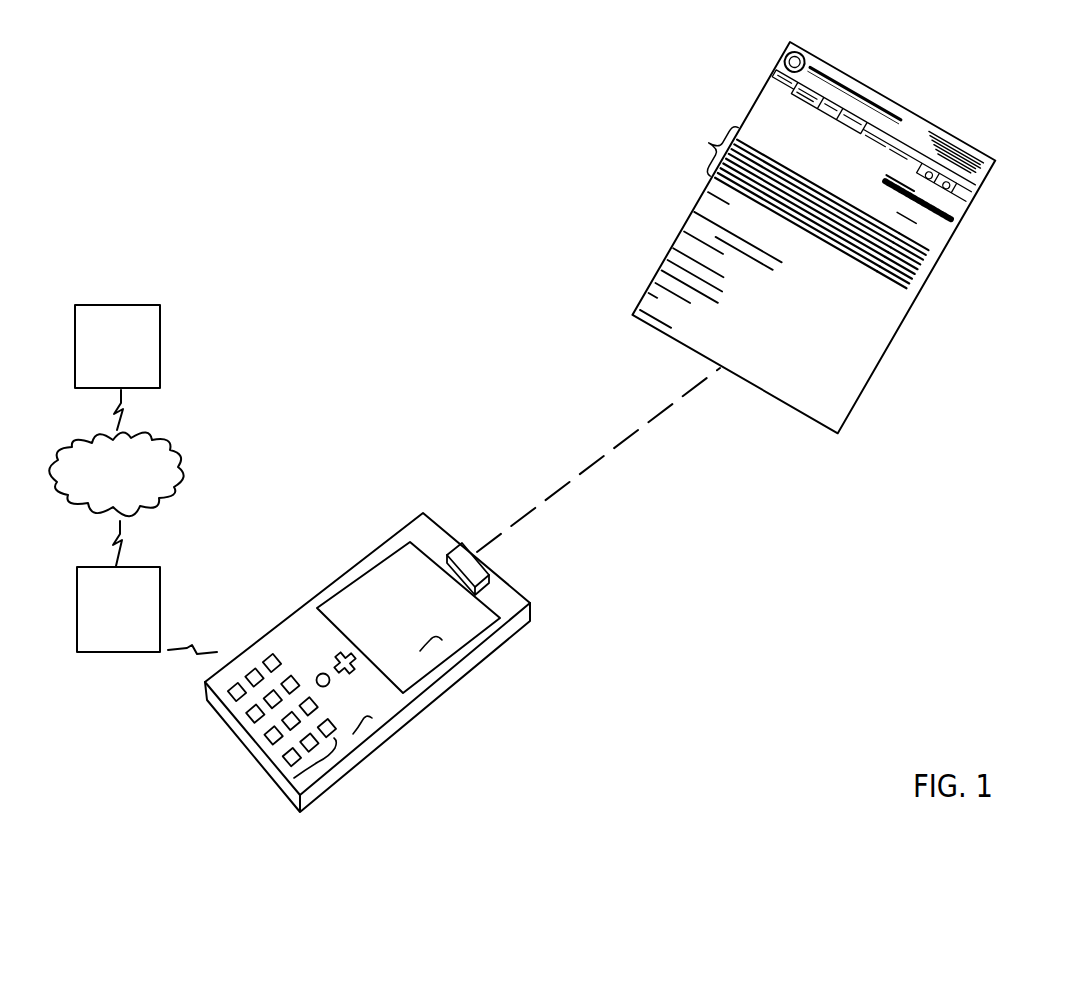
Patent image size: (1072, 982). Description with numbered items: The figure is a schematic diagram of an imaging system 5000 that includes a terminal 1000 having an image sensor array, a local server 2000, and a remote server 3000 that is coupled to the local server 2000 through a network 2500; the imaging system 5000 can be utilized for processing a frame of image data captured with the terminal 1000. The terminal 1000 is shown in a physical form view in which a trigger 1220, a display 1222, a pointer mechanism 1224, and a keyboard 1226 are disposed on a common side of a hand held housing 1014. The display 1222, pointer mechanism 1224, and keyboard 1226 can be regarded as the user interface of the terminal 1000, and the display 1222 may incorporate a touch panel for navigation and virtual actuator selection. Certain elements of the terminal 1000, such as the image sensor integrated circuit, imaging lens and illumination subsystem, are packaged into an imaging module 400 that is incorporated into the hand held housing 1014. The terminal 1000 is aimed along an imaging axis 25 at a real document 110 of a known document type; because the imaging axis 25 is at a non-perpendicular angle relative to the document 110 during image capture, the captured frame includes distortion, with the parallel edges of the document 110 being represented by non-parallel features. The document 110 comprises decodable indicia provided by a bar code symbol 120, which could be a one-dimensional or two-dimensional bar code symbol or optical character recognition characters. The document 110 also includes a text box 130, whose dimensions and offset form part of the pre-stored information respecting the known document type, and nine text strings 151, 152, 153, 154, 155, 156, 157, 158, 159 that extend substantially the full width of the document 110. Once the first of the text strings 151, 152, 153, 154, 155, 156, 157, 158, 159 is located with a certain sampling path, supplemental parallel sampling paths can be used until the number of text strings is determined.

The imaging system 5000 is at (396, 226).
The remote server 3000 is at (117, 346).
The network 2500 is at (116, 474).
The local server 2000 is at (118, 609).
The terminal 1000 is at (334, 530).
The display 1222 is at (437, 650).
The imaging module 400 is at (478, 570).
The keyboard 1226 is at (328, 758).
The pointer mechanism 1224 is at (330, 683).
The trigger 1220 is at (357, 670).
The hand held housing 1014 is at (372, 724).
The imaging axis 25 is at (607, 455).
The document 110 is at (791, 416).
The bar code symbol 120 is at (962, 218).
The text box 130 is at (787, 195).
The text string 151 is at (928, 250).
The text string 152 is at (926, 255).
The text string 153 is at (923, 260).
The text string 154 is at (920, 264).
The text string 155 is at (917, 269).
The text string 156 is at (915, 274).
The text string 157 is at (912, 279).
The text string 158 is at (909, 283).
The text string 159 is at (906, 288).